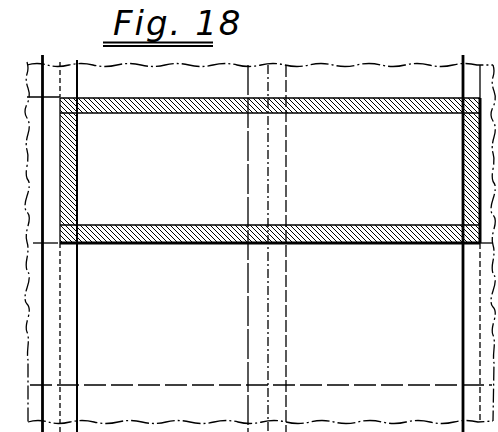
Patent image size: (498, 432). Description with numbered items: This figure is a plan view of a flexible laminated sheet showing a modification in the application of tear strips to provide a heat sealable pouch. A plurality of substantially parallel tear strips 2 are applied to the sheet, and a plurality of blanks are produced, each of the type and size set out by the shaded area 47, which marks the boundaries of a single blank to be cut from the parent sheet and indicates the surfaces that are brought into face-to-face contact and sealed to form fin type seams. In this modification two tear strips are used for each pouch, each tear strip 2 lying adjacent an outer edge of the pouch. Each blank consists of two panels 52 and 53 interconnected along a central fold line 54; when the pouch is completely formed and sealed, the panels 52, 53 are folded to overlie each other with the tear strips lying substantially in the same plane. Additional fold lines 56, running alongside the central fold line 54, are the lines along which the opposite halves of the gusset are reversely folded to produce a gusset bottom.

The tear strip 2 is at (43, 55).
The shaded area 47 is at (173, 106).
The panel 52 is at (169, 188).
The panel 53 is at (381, 188).
The fold line 54 is at (267, 66).
The additional fold line 56 is at (249, 77).